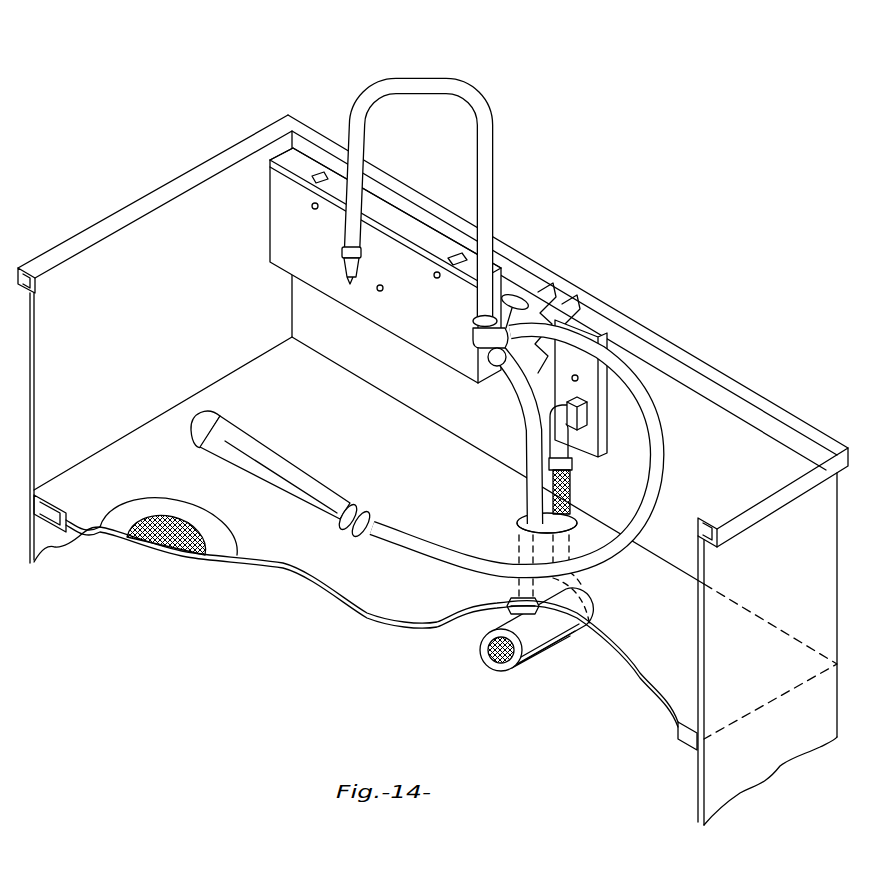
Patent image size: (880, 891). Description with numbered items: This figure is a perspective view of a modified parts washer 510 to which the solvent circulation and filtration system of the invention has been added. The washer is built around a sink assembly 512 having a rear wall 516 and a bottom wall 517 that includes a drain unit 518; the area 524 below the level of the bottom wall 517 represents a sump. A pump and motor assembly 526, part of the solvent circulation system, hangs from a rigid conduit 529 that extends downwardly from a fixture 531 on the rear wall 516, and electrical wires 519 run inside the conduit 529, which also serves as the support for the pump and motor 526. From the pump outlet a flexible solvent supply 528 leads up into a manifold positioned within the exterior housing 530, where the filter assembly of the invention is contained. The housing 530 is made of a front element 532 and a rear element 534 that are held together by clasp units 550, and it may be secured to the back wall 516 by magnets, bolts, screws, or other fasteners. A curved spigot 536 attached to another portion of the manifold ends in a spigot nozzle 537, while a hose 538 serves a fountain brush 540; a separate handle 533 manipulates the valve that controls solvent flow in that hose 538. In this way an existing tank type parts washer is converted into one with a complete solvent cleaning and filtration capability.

The parts washer 510 is at (600, 124).
The sink assembly 512 is at (192, 149).
The rear wall 516 is at (708, 422).
The bottom wall 517 is at (404, 595).
The drain unit 518 is at (192, 557).
The electrical wires 519 is at (570, 490).
The sump area 524 is at (617, 798).
The pump and motor assembly 526 is at (546, 683).
The flexible solvent supply 528 is at (533, 445).
The rigid conduit 529 is at (578, 395).
The exterior housing 530 is at (403, 318).
The fixture 531 is at (606, 412).
The front element 532 is at (293, 218).
The handle 533 is at (513, 297).
The rear element 534 is at (307, 163).
The curved spigot 536 is at (493, 68).
The spigot nozzle 537 is at (340, 262).
The hose 538 is at (393, 532).
The fountain brush 540 is at (290, 465).
The clasp units 550 is at (322, 176).